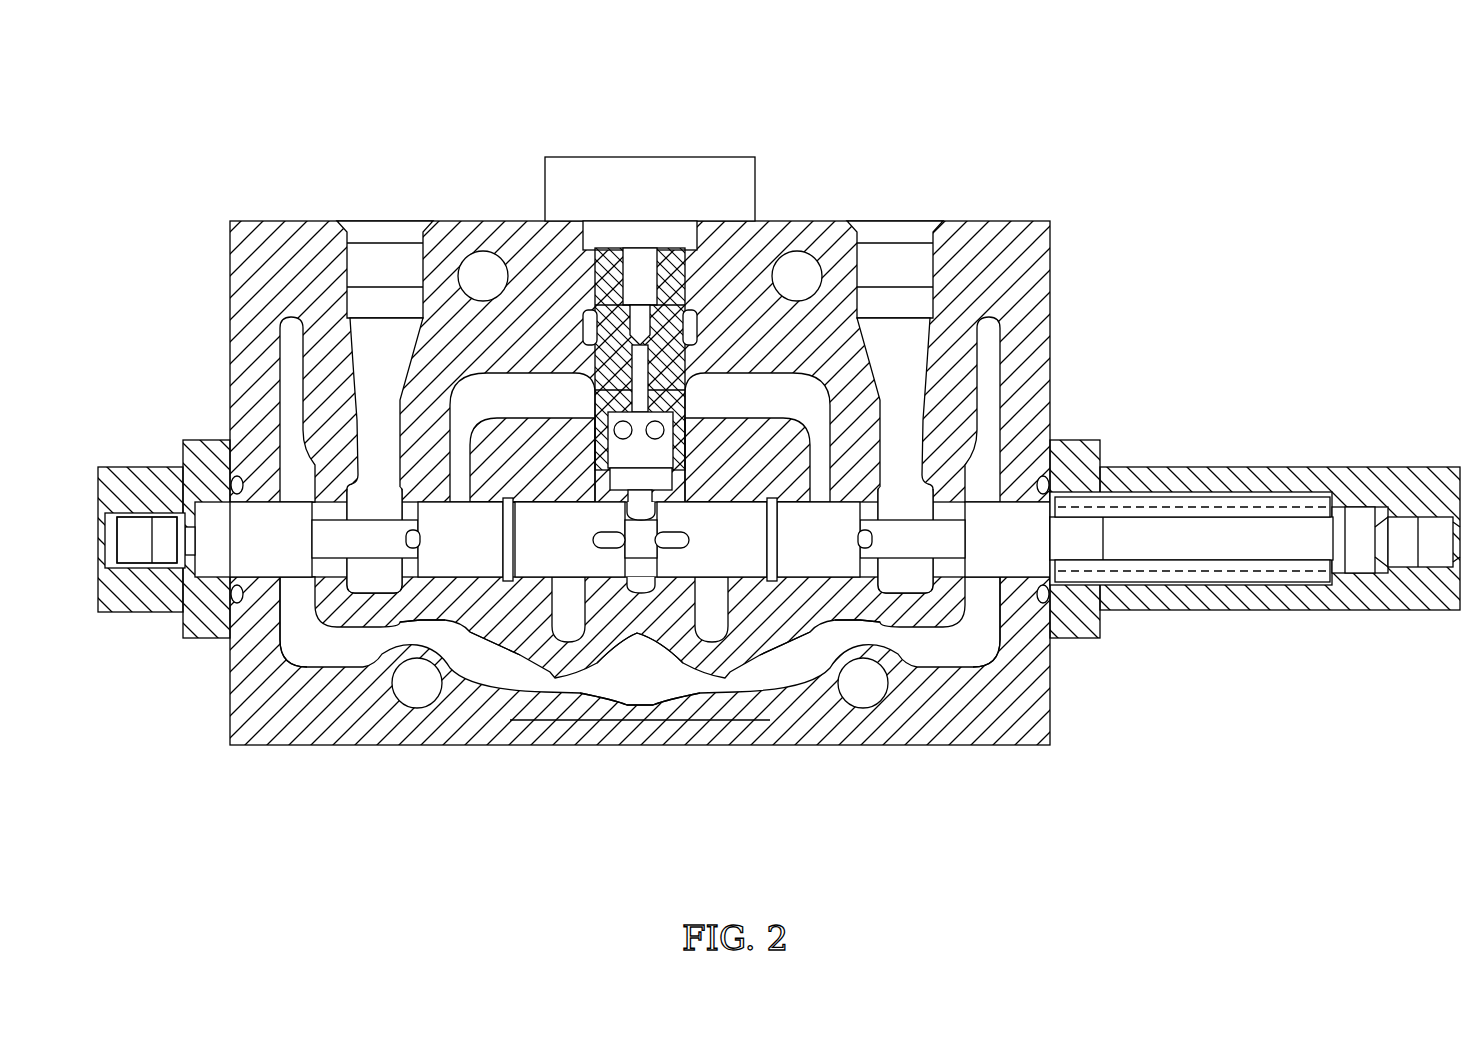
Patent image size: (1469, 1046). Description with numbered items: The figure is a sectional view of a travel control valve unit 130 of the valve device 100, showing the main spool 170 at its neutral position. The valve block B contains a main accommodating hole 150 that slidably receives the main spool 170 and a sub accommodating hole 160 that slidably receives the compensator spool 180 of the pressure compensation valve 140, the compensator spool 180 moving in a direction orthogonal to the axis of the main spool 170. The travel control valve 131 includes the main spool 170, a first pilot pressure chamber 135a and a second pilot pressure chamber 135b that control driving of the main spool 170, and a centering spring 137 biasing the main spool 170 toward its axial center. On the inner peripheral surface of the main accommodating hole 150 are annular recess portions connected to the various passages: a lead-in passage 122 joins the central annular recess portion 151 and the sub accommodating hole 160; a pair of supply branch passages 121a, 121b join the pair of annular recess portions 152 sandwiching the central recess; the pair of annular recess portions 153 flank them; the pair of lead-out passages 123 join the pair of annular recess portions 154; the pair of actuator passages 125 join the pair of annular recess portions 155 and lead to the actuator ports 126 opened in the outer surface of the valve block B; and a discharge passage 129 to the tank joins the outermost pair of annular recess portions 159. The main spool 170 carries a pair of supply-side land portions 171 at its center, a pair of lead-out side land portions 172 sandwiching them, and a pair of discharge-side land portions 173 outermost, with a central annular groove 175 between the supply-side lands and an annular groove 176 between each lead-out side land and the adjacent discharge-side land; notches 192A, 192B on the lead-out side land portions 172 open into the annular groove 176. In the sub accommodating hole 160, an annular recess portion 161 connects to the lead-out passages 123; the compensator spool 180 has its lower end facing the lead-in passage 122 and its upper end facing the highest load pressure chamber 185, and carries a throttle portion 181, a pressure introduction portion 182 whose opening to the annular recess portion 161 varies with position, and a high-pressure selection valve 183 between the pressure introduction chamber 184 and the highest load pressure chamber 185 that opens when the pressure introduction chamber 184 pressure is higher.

The valve device 100 is at (146, 138).
The travel control valve unit 130 is at (216, 148).
The valve block B is at (300, 218).
The lead-in passage 122 is at (470, 390).
The actuator port 126 is at (880, 230).
The actuator passage 125 is at (946, 166).
The annular groove 176 is at (388, 590).
The main spool 170 is at (245, 495).
The second notch 192B is at (412, 530).
The first notch 192A is at (868, 530).
The lead-out passage 123 is at (640, 437).
The annular recess portion 155 is at (348, 600).
The annular recess portion 159 is at (238, 650).
The discharge passage 129 is at (680, 708).
The supply branch passage 121b is at (512, 722).
The supply branch passage 121a is at (768, 722).
The annular recess portion 152 is at (566, 600).
The annular recess portion 153 is at (472, 590).
The annular recess portion 154 is at (430, 612).
The annular recess portion 151 is at (641, 590).
The central annular groove 175 is at (618, 595).
The pressure compensation valve 140 is at (640, 243).
The sub accommodating hole 160 is at (697, 235).
The compensator spool 180 is at (605, 280).
The high-pressure selection valve 183 is at (648, 320).
The pressure introduction portion 182 is at (588, 330).
The annular recess portion 161 is at (698, 312).
The pressure introduction chamber 184 is at (660, 424).
The highest load pressure chamber 185 is at (612, 425).
The throttle portion 181 is at (805, 420).
The discharge-side land portion 173 is at (759, 539).
The lead-out side land portion 172 is at (639, 539).
The supply-side land portion 171 is at (640, 539).
The travel control valve 131 is at (185, 492).
The second pilot pressure chamber 135b is at (200, 590).
The main accommodating hole 150 is at (1058, 480).
The centering spring 137 is at (1308, 495).
The first pilot pressure chamber 135a is at (1363, 562).